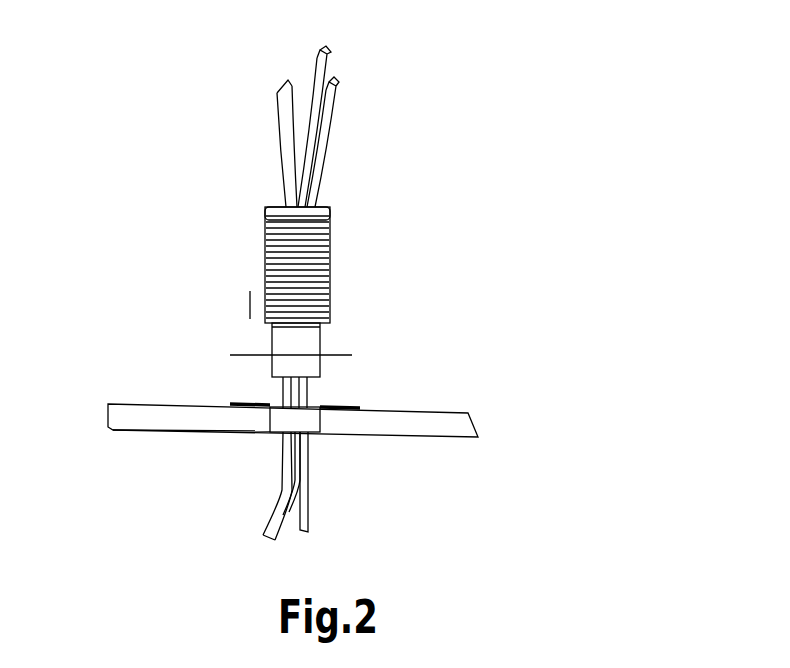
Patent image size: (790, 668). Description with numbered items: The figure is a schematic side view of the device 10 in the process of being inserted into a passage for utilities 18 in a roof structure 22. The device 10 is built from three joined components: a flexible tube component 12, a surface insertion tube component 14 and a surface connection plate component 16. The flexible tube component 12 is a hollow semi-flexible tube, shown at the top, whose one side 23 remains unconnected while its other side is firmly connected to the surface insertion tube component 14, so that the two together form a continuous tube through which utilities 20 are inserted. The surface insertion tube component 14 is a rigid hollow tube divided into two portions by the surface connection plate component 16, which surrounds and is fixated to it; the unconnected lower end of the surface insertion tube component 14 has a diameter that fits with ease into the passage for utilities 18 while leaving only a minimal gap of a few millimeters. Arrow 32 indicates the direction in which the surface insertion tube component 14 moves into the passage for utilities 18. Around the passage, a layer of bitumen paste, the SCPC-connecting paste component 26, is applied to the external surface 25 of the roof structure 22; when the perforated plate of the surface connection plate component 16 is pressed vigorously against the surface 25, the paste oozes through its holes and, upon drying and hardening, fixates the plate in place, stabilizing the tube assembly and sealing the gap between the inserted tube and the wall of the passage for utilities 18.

The device 10 is at (453, 148).
The flexible tube component 12 is at (327, 270).
The surface insertion tube component 14 is at (313, 340).
The surface connection plate component 16 is at (352, 356).
The passage for utilities 18 is at (318, 432).
The utilities 20 is at (278, 93).
The roof structure 22 is at (466, 424).
The unconnected side of flexible tube component 23 is at (328, 203).
The external surface of roof structure 25 is at (468, 413).
The SCPC-connecting paste component 26 is at (205, 405).
The arrow 32 is at (250, 298).